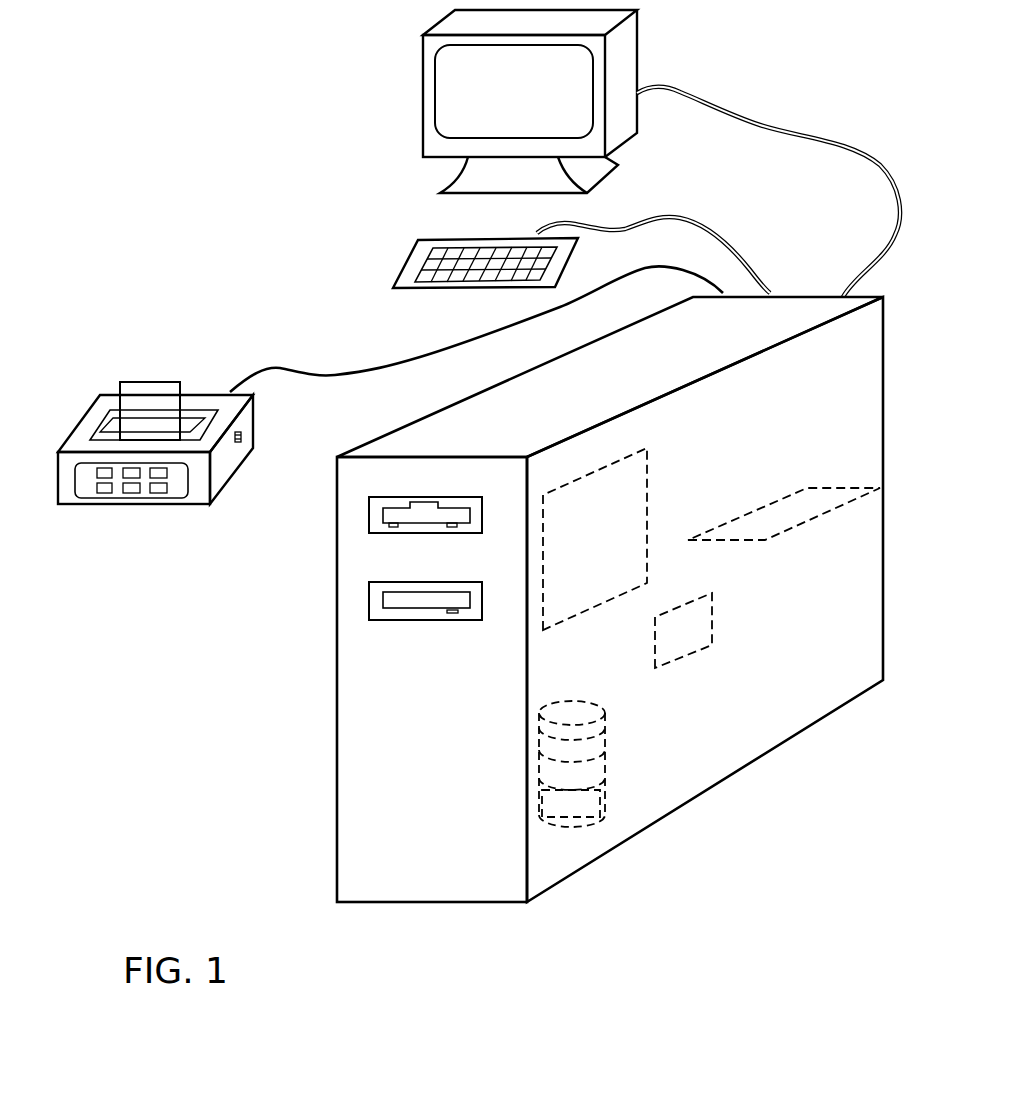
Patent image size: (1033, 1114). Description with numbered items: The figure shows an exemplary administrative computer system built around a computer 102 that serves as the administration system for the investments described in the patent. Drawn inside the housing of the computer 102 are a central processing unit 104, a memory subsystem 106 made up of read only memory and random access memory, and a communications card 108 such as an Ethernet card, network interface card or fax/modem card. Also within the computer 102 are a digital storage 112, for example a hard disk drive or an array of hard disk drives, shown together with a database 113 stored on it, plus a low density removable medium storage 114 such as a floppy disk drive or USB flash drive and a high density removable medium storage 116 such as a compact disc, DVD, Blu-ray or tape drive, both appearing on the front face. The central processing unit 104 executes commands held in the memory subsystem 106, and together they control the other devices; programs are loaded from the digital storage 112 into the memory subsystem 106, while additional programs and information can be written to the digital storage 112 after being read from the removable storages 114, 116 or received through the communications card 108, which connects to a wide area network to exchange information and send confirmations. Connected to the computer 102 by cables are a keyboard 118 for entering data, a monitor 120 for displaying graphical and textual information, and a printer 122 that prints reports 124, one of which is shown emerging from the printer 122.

The computer system 102 is at (473, 418).
The central processing unit 104 is at (710, 630).
The memory subsystem 106 is at (635, 518).
The communications card 108 is at (783, 513).
The digital storage 112 is at (573, 708).
The database 113 is at (593, 808).
The low density removable medium storage 114 is at (378, 535).
The high density removable medium storage 116 is at (390, 613).
The keyboard 118 is at (402, 262).
The monitor 120 is at (422, 87).
The printer 122 is at (110, 395).
The reports 124 is at (155, 380).